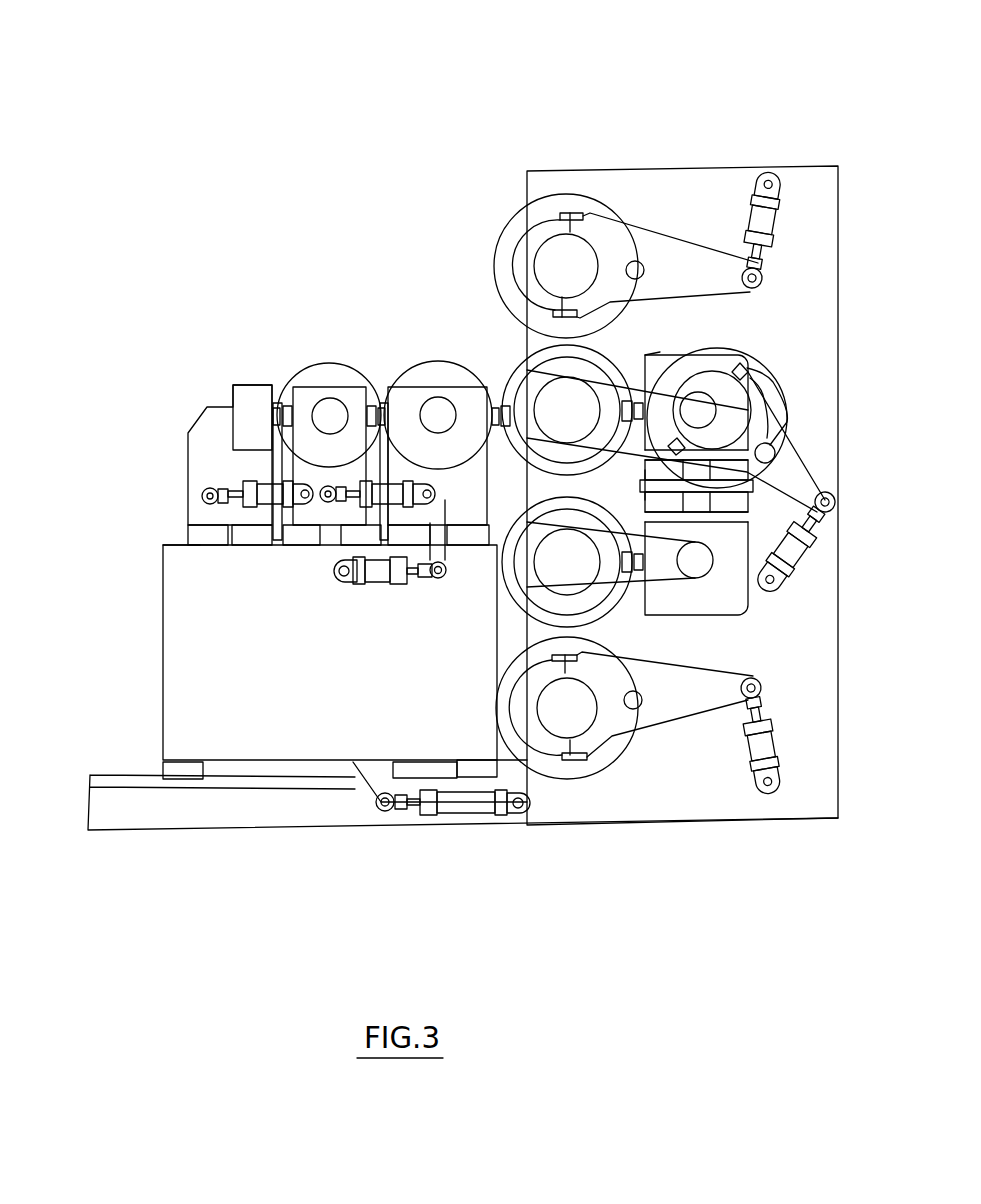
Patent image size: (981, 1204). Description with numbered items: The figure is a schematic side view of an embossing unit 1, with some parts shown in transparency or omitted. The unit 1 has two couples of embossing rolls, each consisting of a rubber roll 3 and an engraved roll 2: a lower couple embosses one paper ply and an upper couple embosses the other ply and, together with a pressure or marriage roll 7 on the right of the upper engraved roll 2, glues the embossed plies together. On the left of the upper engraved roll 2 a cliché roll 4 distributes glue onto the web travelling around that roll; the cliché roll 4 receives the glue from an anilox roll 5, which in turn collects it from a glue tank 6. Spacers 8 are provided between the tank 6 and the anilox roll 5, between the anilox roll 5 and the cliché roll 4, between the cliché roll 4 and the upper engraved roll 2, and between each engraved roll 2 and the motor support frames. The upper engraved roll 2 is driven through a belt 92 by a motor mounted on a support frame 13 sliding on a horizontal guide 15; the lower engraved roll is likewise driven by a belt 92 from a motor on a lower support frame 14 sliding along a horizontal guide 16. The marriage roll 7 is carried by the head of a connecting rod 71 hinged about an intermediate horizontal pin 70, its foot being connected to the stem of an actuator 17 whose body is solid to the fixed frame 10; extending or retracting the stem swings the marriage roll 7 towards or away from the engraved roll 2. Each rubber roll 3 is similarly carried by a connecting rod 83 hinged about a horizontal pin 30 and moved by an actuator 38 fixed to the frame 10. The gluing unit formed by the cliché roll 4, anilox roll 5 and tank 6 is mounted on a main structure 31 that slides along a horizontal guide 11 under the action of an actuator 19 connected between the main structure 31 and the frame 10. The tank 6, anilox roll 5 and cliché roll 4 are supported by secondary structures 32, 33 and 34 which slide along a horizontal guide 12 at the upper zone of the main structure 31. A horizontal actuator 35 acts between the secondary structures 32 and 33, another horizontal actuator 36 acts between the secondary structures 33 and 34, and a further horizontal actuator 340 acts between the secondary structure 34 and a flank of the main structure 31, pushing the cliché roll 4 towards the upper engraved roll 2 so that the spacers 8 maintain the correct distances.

The embossing unit 1 is at (715, 110).
The engraved roll 2 is at (520, 390).
The rubber roll 3 is at (504, 223).
The cliché roll 4 is at (400, 357).
The anilox roll 5 is at (303, 363).
The glue tank 6 is at (237, 388).
The marriage roll 7 is at (763, 360).
The spacers 8 is at (277, 405).
The frame 10 is at (825, 803).
The horizontal guide 11 is at (110, 778).
The horizontal guide 12 is at (163, 545).
The support frame 13 is at (650, 353).
The lower support frame 14 is at (745, 605).
The horizontal guide 15 is at (645, 487).
The horizontal guide 16 is at (750, 500).
The actuator 17 is at (798, 563).
The actuator 19 is at (445, 822).
The horizontal pin 30 is at (650, 265).
The main structure 31 is at (165, 703).
The secondary structure 32 is at (187, 427).
The secondary structure 33 is at (290, 522).
The secondary structure 34 is at (464, 514).
The horizontal actuator 35 is at (250, 490).
The horizontal actuator 36 is at (350, 502).
The actuator 38 is at (772, 218).
The horizontal pin 70 is at (760, 356).
The connecting rod 71 is at (798, 462).
The connecting rod 83 is at (703, 267).
The belt 92 is at (617, 347).
The horizontal actuator 340 is at (372, 582).